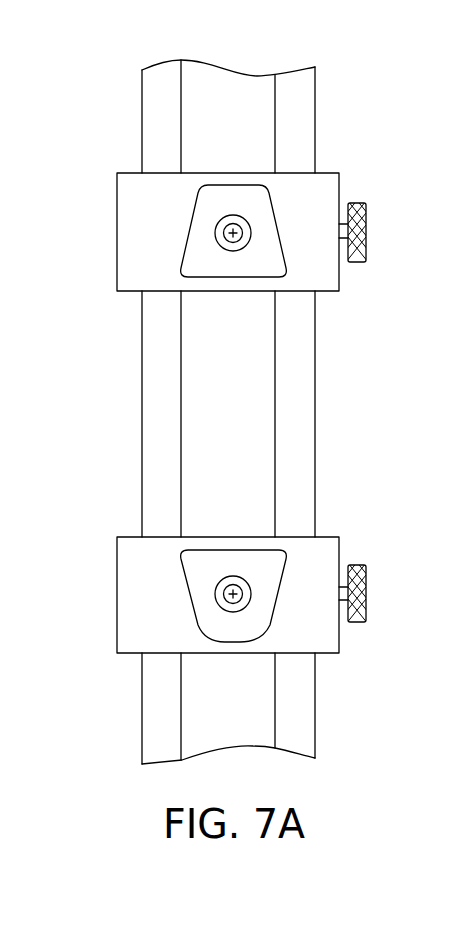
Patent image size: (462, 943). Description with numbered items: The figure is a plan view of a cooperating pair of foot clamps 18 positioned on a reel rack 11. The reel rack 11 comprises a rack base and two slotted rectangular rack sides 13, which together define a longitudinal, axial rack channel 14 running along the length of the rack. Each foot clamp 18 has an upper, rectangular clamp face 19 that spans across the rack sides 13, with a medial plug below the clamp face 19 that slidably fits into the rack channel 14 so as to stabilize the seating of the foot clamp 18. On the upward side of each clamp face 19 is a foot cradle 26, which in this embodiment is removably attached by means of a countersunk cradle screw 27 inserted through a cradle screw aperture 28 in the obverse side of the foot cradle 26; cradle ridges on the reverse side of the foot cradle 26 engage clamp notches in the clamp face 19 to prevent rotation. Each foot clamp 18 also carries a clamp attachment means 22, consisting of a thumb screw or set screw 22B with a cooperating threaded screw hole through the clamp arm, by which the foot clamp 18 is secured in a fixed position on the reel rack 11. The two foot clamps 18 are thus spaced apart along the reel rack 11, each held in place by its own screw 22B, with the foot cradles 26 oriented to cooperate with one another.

The reel rack 11 is at (223, 392).
The rack side 13 is at (152, 112).
The rack channel 14 is at (242, 121).
The foot clamp 18 is at (235, 403).
The clamp face 19 is at (133, 215).
The clamp attachment means 22 is at (388, 376).
The thumb screw or set screw 22B is at (358, 225).
The foot cradle 26 is at (182, 250).
The cradle screw 27 is at (240, 237).
The cradle screw aperture 28 is at (242, 233).